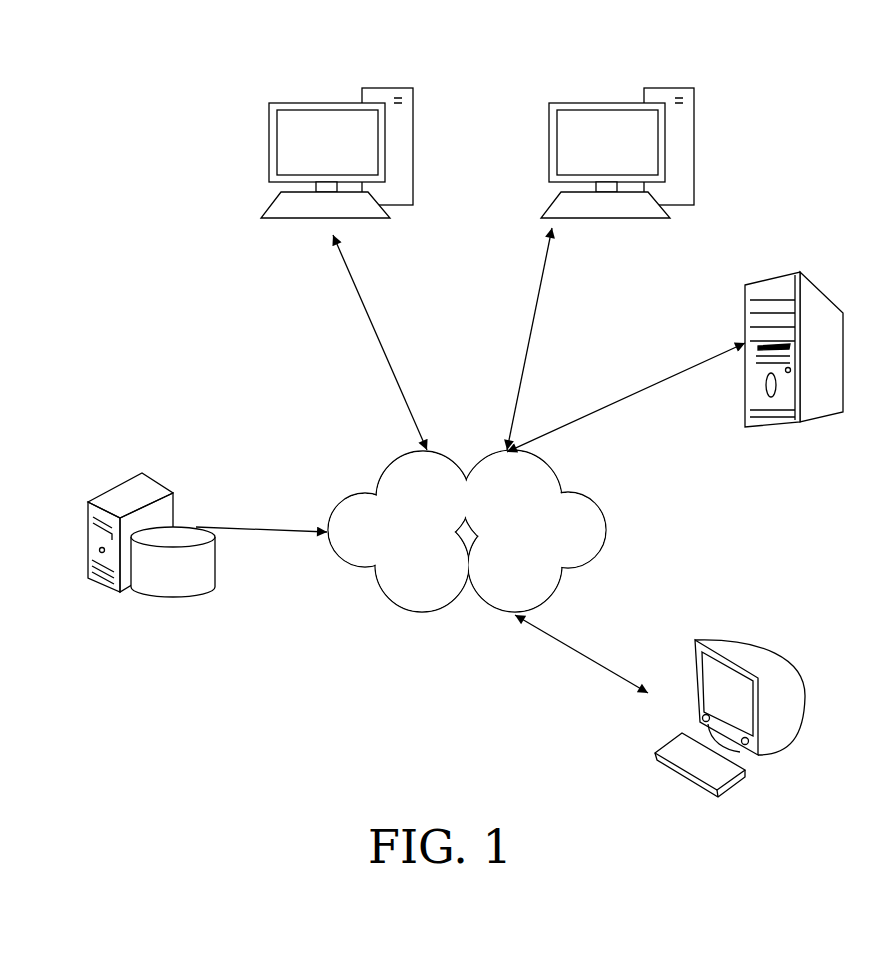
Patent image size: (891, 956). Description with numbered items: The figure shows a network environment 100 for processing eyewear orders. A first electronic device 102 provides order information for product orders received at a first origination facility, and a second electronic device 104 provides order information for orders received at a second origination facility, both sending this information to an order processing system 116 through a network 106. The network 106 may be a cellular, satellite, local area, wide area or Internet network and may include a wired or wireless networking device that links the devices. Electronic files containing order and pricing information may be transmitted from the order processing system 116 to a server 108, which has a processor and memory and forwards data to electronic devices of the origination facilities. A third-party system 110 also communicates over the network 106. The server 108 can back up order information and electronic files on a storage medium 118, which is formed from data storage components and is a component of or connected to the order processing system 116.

The network environment 100 is at (133, 76).
The first electronic device 102 is at (688, 88).
The second electronic device 104 is at (348, 103).
The network 106 is at (486, 541).
The server 108 is at (802, 264).
The third-party system 110 is at (756, 643).
The order processing system 116 is at (112, 488).
The storage medium 118 is at (216, 561).